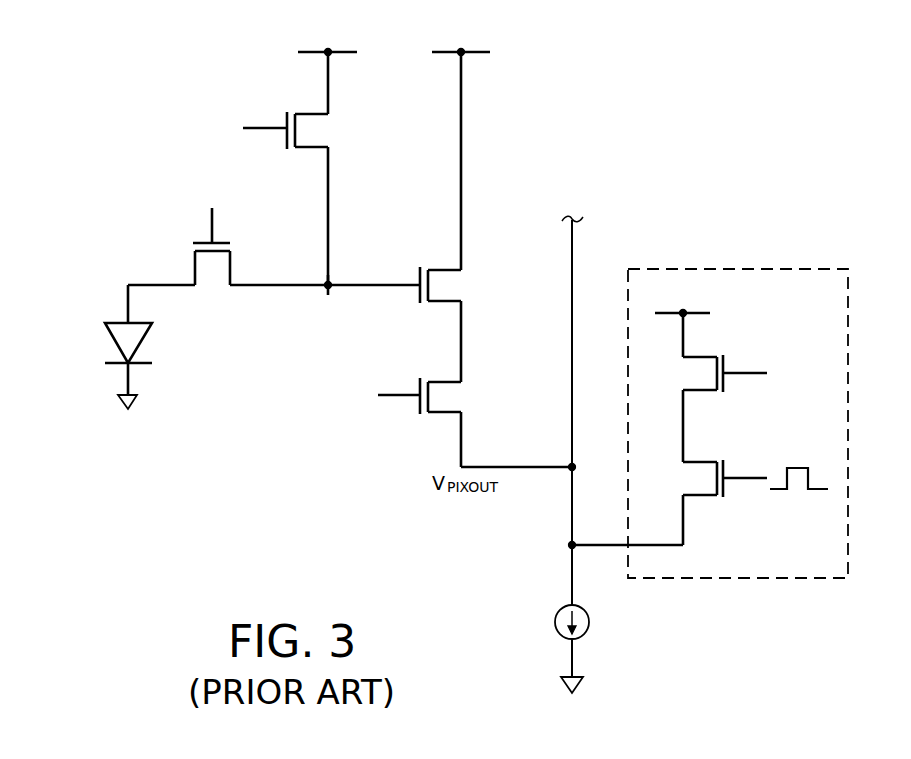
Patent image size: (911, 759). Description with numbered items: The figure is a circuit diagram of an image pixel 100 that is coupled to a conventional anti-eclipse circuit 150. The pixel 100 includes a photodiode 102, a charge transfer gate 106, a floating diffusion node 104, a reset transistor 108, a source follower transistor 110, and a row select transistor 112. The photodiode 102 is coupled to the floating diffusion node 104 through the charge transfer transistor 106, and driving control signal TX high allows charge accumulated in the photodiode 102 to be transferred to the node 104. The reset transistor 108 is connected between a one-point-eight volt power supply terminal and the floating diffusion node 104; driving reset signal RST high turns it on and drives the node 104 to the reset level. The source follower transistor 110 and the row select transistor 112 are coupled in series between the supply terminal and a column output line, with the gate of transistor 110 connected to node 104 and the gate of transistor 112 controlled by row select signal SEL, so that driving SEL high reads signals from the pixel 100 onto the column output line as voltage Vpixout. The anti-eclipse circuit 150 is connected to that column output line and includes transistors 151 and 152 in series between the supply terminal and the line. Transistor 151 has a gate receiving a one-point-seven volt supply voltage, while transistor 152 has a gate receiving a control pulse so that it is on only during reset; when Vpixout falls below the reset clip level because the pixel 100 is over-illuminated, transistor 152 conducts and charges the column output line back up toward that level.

The image pixel 100 is at (124, 49).
The photodiode 102 is at (121, 347).
The floating diffusion node 104 is at (325, 282).
The charge transfer gate 106 is at (198, 268).
The reset transistor 108 is at (311, 118).
The source follower transistor 110 is at (445, 272).
The row select transistor 112 is at (445, 408).
The anti-eclipse circuit 150 is at (773, 268).
The transistor 151 is at (697, 360).
The transistor 152 is at (700, 492).